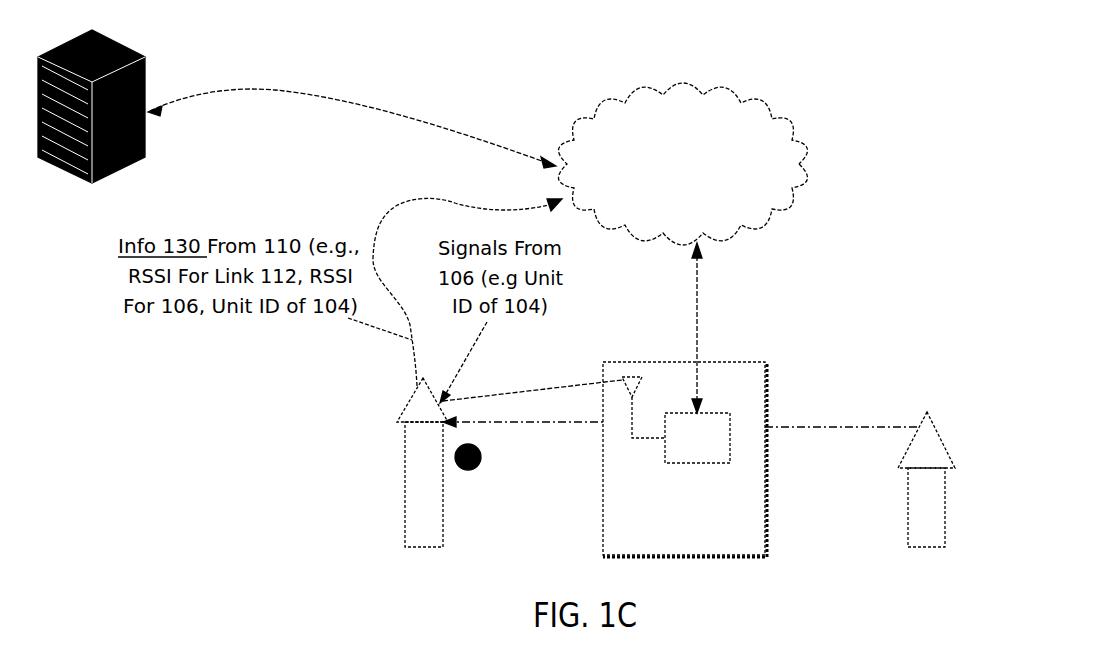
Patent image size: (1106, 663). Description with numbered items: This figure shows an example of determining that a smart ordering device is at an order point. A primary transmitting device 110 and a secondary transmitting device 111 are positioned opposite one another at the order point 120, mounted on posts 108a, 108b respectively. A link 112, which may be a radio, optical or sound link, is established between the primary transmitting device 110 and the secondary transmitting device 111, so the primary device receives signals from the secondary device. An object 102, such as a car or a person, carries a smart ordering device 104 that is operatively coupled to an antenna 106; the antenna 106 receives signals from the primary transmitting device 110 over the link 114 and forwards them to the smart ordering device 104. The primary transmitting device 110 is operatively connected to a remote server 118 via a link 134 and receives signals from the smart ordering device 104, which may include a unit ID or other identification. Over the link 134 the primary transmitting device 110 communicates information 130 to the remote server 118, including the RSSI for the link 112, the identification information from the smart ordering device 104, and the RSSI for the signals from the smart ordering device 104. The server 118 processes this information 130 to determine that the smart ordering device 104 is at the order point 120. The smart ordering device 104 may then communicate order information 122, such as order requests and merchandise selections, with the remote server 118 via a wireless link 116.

The object 102 is at (767, 364).
The smart ordering device 104 is at (697, 467).
The antenna 106 is at (635, 366).
The post 108a is at (404, 480).
The post 108b is at (945, 508).
The primary transmitting device 110 is at (410, 392).
The secondary transmitting device 111 is at (948, 452).
The link 112 is at (517, 425).
The link 114 is at (538, 383).
The link 116 is at (252, 93).
The remote server 118 is at (123, 172).
The order point 120 is at (472, 472).
The order information 122 is at (707, 328).
The information 130 is at (352, 128).
The link 134 is at (404, 202).